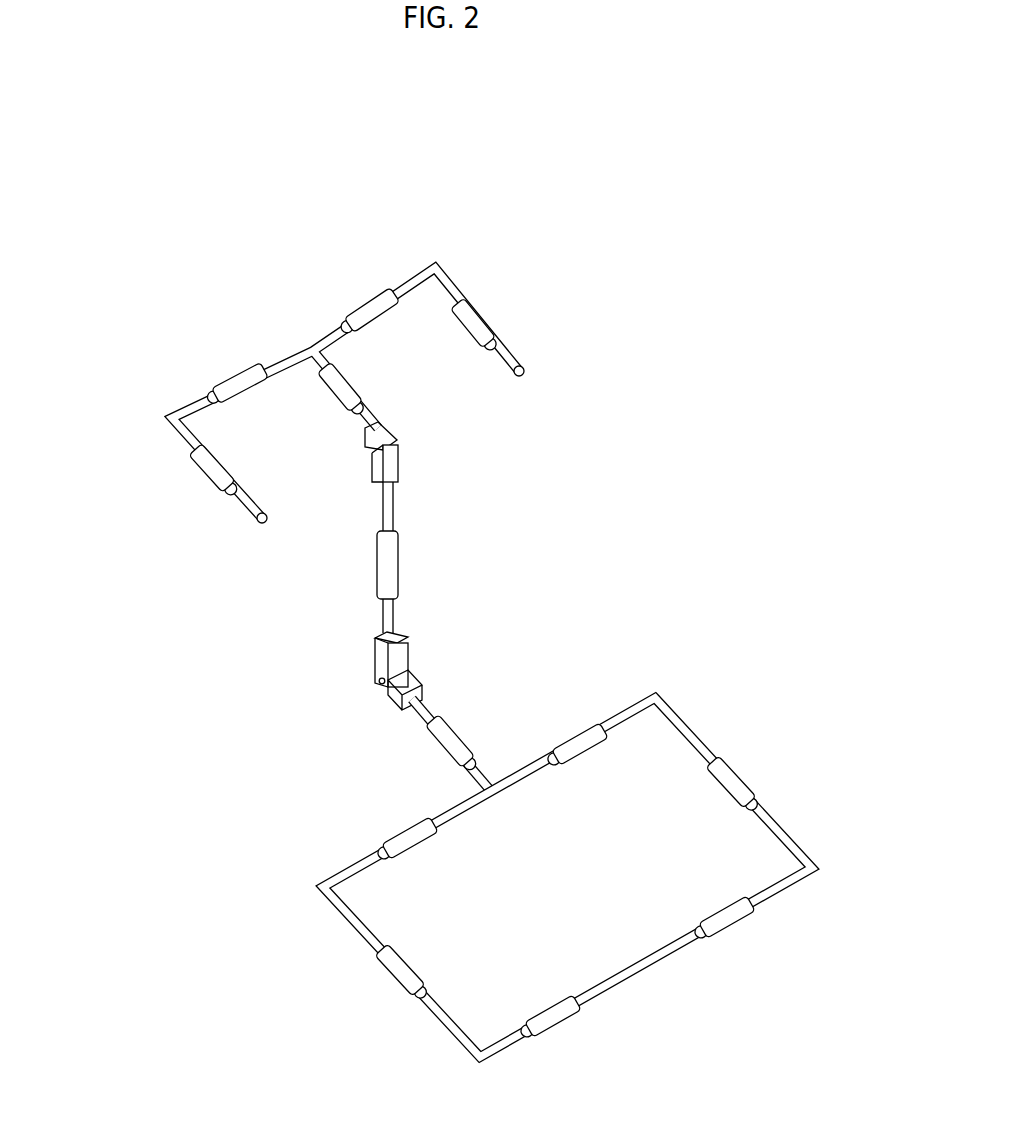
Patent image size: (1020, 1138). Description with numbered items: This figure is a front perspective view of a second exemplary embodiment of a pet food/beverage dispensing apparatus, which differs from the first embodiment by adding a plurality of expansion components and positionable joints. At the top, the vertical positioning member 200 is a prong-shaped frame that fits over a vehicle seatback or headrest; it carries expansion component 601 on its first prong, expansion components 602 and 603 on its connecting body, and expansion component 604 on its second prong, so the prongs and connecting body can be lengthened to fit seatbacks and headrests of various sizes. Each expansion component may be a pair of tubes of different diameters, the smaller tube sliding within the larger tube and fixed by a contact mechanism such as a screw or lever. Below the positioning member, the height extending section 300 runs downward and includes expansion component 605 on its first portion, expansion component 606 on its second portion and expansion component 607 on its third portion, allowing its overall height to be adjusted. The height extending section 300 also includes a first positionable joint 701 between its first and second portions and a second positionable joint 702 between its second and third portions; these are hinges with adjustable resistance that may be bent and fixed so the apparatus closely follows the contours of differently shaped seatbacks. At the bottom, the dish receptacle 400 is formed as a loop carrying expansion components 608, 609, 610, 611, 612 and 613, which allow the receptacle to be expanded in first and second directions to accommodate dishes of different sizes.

The vertical positioning member 200 is at (287, 318).
The height extending section 300 is at (345, 566).
The dish receptacle 400 is at (727, 703).
The expansion component 601 is at (207, 477).
The expansion component 602 is at (212, 384).
The expansion component 603 is at (370, 293).
The expansion component 604 is at (492, 317).
The expansion component 605 is at (367, 393).
The expansion component 606 is at (399, 562).
The expansion component 607 is at (437, 747).
The expansion component 608 is at (572, 740).
The expansion component 609 is at (730, 767).
The expansion component 610 is at (733, 927).
The expansion component 611 is at (570, 1022).
The expansion component 612 is at (390, 980).
The expansion component 613 is at (380, 847).
The first positionable joint 701 is at (410, 644).
The second positionable joint 702 is at (400, 462).